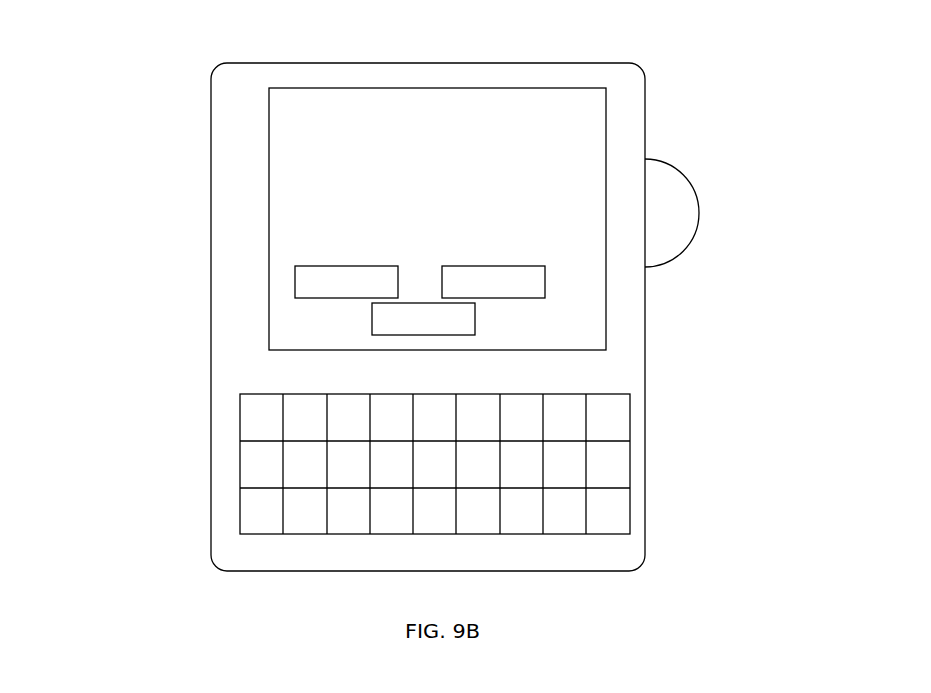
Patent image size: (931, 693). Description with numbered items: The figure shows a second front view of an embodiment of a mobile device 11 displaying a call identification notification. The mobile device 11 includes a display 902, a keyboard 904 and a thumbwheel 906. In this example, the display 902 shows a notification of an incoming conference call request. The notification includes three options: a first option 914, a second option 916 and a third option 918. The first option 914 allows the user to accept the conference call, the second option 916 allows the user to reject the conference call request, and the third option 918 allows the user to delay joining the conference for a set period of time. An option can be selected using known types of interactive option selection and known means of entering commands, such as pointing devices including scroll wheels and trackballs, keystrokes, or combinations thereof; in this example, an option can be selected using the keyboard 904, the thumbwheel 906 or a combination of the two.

The mobile device 11 is at (78, 103).
The display 902 is at (533, 63).
The keyboard 904 is at (240, 457).
The thumbwheel 906 is at (677, 160).
The first option 914 is at (295, 284).
The second option 916 is at (545, 284).
The third option 918 is at (372, 322).